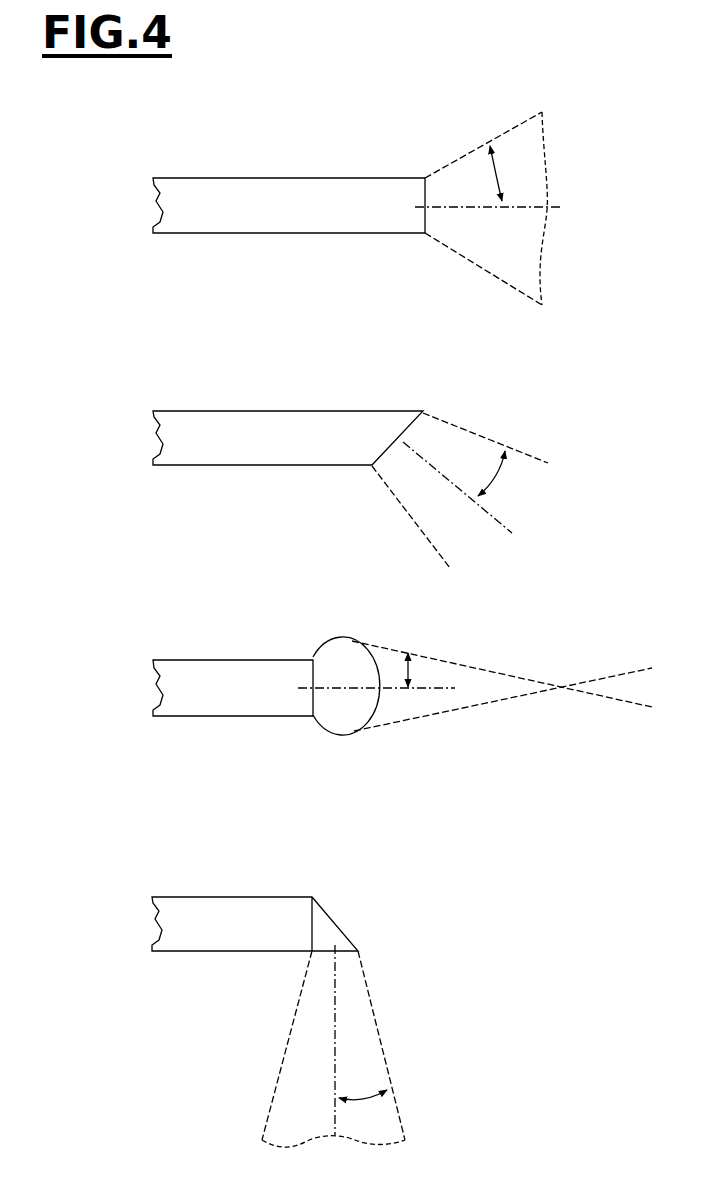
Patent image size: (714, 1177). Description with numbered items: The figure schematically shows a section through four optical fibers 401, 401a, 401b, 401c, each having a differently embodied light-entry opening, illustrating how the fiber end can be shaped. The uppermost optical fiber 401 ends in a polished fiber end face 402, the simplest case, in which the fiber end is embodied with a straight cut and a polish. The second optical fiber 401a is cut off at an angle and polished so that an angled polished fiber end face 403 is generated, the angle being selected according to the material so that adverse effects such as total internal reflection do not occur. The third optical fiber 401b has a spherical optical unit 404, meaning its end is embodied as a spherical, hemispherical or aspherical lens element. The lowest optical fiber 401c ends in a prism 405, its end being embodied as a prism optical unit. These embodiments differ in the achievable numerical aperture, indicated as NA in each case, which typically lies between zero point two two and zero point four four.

The optical fiber 401 is at (252, 168).
The polished fiber end face 402 is at (427, 218).
The optical fiber 401a is at (243, 398).
The angled polished fiber end face 403 is at (408, 427).
The optical fiber 401b is at (223, 652).
The spherical optical unit 404 is at (378, 705).
The optical fiber 401c is at (222, 888).
The prism 405 is at (333, 923).